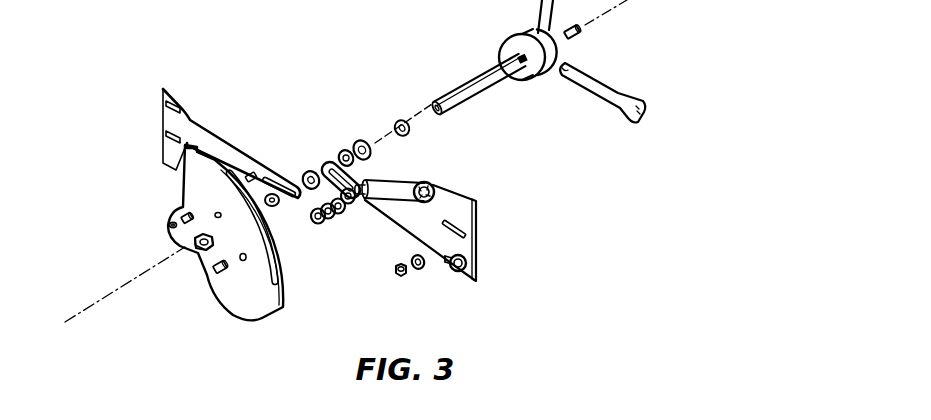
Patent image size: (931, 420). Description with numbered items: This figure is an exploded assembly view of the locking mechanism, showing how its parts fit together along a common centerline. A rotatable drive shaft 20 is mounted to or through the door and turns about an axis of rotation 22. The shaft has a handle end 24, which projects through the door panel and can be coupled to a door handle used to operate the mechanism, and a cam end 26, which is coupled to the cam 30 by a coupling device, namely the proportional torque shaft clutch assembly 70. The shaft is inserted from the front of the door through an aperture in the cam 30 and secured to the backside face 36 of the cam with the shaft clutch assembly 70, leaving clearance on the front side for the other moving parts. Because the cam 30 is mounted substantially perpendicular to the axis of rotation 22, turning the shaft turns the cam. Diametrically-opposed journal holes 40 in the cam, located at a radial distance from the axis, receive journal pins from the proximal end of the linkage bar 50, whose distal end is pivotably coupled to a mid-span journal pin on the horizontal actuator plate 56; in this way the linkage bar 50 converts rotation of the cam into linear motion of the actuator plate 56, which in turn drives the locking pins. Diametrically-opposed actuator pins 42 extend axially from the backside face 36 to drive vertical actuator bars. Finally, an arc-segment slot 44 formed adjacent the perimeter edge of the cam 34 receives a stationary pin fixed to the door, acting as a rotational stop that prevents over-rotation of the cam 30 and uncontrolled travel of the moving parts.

The rotatable shaft 20 is at (519, 70).
The axis of rotation 22 is at (97, 302).
The handle end 24 is at (527, 63).
The cam end 26 is at (444, 97).
The cam 30 is at (212, 255).
The perimeter edge of the cam 34 is at (282, 242).
The backside face 36 is at (230, 287).
The journal holes 40 is at (246, 262).
The actuator pins 42 is at (182, 217).
The arc-segment slot 44 is at (236, 170).
The linkage bar 50 is at (390, 178).
The actuator plate 56 is at (482, 228).
The shaft clutch assembly 70 is at (181, 246).